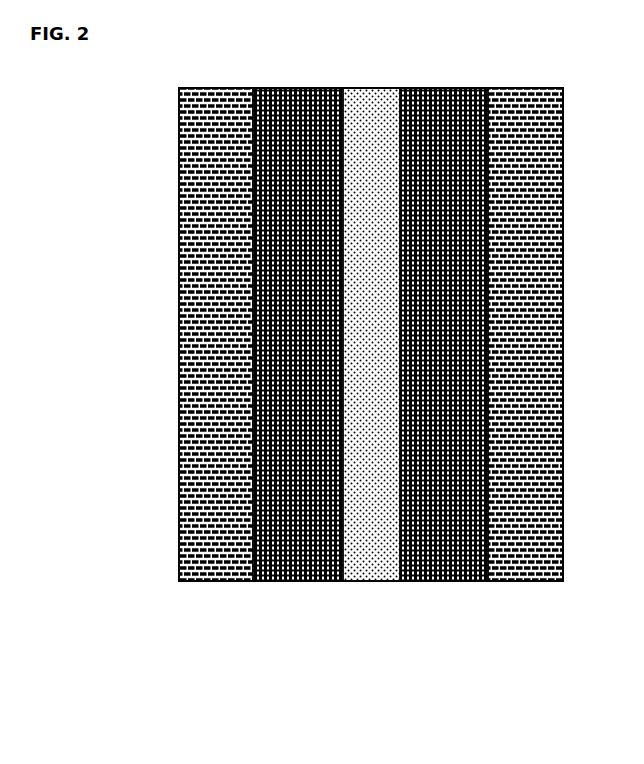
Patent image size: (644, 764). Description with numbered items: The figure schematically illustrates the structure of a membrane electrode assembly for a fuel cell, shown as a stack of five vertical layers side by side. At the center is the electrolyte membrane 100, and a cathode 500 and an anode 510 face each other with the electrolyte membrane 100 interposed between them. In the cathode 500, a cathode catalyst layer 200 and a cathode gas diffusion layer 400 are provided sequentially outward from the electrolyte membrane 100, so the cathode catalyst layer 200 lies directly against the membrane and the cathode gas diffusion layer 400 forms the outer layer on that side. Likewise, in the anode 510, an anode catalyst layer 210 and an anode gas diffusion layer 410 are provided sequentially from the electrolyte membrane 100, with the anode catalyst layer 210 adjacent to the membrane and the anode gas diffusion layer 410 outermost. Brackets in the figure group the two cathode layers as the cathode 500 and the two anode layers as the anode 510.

The electrolyte membrane 100 is at (367, 575).
The cathode catalyst layer 200 is at (267, 575).
The anode catalyst layer 210 is at (438, 575).
The cathode gas diffusion layer 400 is at (195, 575).
The anode gas diffusion layer 410 is at (517, 575).
The cathode 500 is at (240, 421).
The anode 510 is at (498, 420).